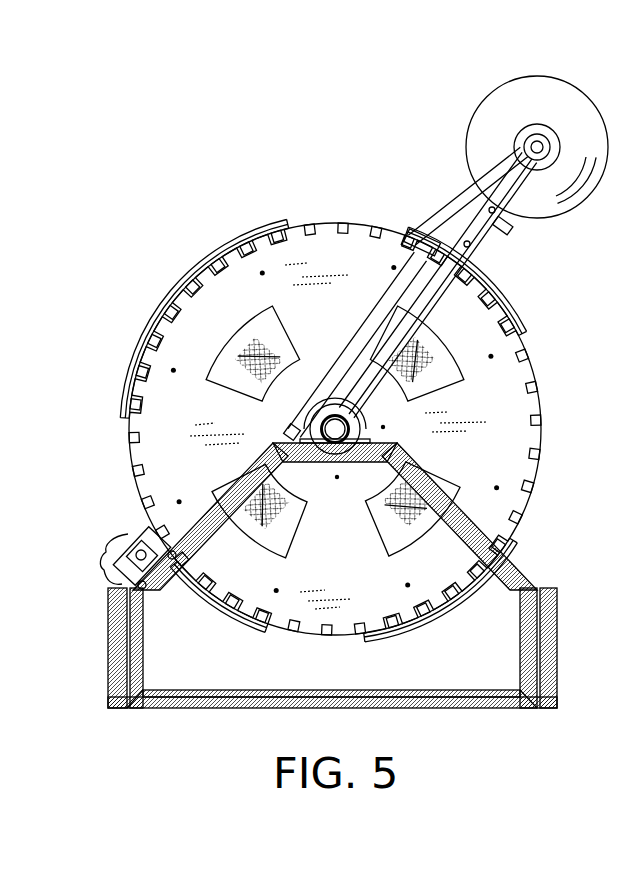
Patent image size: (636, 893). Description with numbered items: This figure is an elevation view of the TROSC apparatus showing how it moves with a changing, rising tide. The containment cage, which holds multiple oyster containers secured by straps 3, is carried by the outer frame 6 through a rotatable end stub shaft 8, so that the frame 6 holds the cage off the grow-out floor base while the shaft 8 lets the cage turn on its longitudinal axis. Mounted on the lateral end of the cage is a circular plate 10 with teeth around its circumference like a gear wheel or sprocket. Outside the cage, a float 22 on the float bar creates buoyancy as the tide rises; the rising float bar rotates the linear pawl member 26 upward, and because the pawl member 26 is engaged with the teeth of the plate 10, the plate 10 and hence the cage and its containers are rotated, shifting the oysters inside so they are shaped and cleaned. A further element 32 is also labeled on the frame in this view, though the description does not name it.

The strap 3 is at (184, 264).
The outer frame 6 is at (549, 656).
The rotatable end stub shaft 8 is at (357, 426).
The circular plate 10 is at (326, 244).
The float 22 is at (523, 100).
The linear pawl member 26 is at (456, 210).
The clamp bracket 32 is at (106, 560).